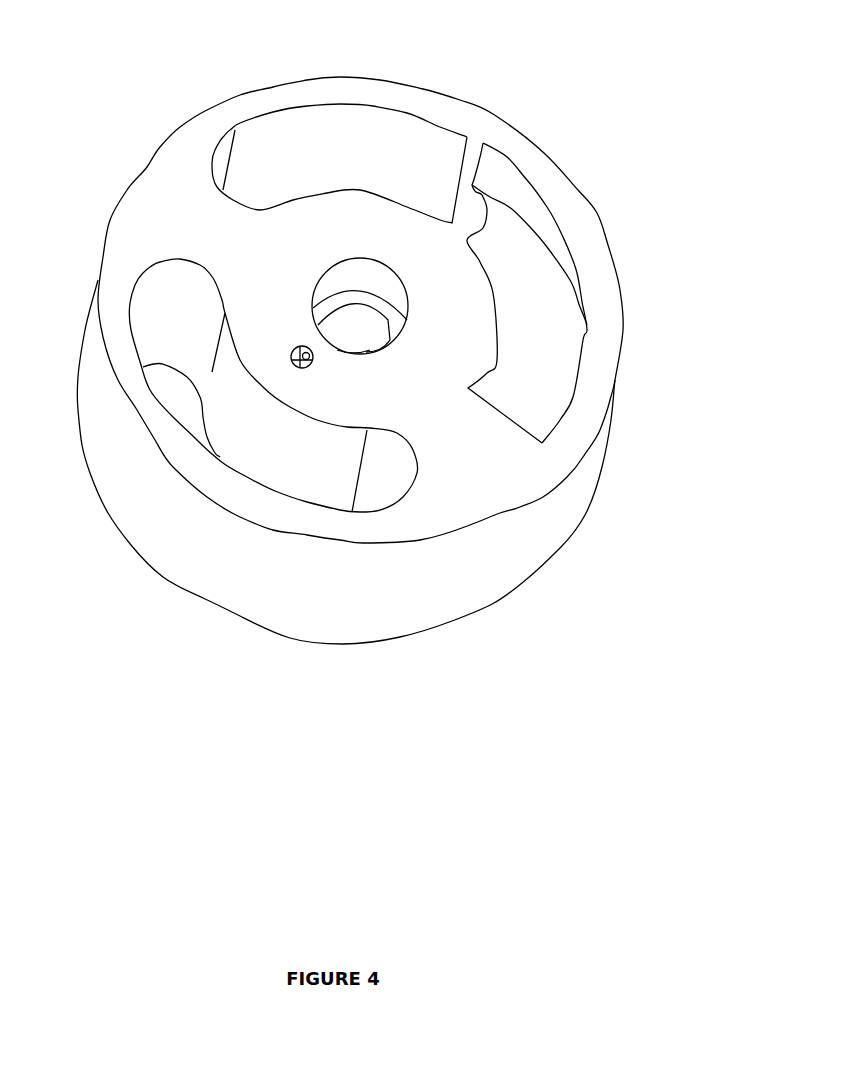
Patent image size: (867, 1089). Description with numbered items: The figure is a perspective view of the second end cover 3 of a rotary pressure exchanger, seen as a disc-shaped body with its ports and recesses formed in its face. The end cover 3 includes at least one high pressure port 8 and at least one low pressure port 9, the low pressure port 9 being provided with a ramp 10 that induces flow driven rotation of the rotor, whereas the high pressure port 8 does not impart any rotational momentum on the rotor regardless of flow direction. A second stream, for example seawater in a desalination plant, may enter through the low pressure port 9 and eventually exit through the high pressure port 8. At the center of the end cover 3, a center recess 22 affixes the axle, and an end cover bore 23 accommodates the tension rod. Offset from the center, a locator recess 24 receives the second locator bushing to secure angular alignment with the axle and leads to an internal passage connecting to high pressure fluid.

The second end cover 3 is at (148, 540).
The high pressure port 8 is at (213, 372).
The low pressure port 9 is at (400, 133).
The ramp 10 is at (548, 340).
The center recess 22 is at (350, 277).
The end cover bore 23 is at (350, 333).
The locator recess 24 is at (300, 370).